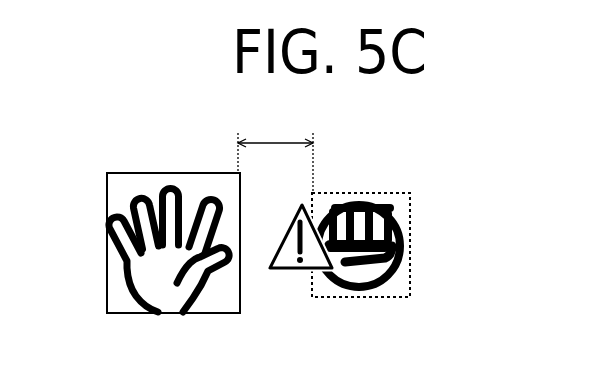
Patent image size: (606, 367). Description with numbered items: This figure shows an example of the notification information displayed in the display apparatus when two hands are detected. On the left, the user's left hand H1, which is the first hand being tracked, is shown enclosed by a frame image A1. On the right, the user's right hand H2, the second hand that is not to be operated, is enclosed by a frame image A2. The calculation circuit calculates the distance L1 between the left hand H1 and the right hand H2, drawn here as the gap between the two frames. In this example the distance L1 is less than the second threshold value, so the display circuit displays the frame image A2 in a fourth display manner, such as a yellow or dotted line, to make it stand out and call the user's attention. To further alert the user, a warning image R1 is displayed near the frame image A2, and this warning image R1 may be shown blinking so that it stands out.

The left hand H1 is at (97, 203).
The frame image A1 is at (143, 173).
The distance L1 is at (277, 151).
The frame image A2 is at (378, 192).
The right hand H2 is at (425, 224).
The warning image R1 is at (287, 278).